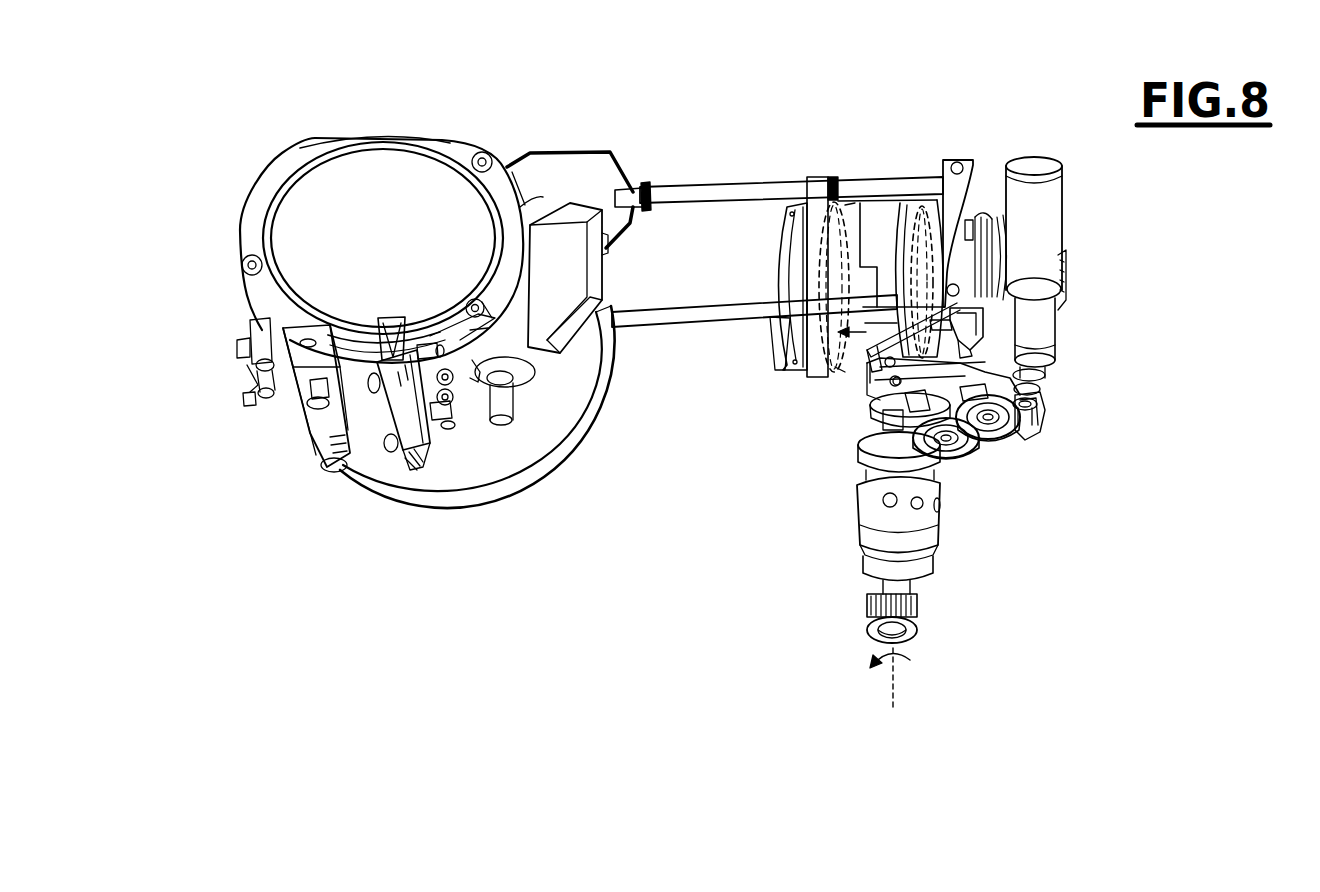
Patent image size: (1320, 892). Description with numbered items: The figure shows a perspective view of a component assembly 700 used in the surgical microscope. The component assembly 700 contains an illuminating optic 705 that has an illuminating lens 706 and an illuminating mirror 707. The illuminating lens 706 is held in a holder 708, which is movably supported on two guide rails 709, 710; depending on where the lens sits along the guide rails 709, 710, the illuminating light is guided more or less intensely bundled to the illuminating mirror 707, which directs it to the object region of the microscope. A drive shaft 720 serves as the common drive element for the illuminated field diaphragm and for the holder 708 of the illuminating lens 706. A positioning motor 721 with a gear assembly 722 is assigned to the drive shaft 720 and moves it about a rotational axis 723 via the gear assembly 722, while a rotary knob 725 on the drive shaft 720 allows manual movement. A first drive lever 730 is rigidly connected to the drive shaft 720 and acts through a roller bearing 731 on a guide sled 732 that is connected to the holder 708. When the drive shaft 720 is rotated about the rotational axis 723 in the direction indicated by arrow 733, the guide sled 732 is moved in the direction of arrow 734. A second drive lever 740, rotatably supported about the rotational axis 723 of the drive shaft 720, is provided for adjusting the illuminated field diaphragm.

The component assembly 700 is at (287, 575).
The illuminating optic 705 is at (940, 150).
The illuminating lens 706 is at (830, 377).
The illuminating mirror 707 is at (555, 228).
The holder 708 is at (805, 377).
The guide rail 709 is at (706, 190).
The guide rail 710 is at (680, 316).
The drive shaft 720 is at (903, 587).
The positioning motor 721 is at (1055, 343).
The gear assembly 722 is at (952, 485).
The rotational axis 723 is at (893, 705).
The rotary knob 725 is at (913, 615).
The first drive lever 730 is at (955, 295).
The roller bearing 731 is at (975, 350).
The guide sled 732 is at (992, 314).
The arrow 733 is at (905, 672).
The arrow 734 is at (858, 377).
The second drive lever 740 is at (1037, 432).